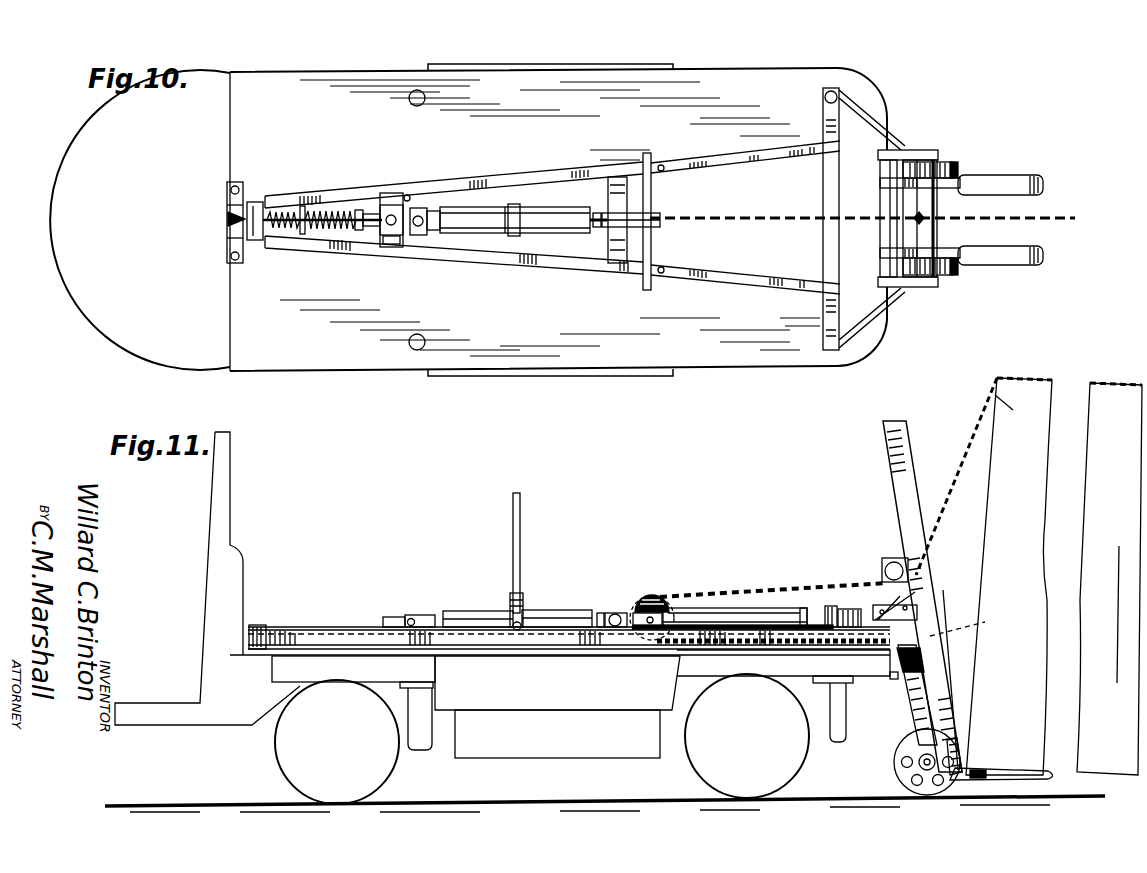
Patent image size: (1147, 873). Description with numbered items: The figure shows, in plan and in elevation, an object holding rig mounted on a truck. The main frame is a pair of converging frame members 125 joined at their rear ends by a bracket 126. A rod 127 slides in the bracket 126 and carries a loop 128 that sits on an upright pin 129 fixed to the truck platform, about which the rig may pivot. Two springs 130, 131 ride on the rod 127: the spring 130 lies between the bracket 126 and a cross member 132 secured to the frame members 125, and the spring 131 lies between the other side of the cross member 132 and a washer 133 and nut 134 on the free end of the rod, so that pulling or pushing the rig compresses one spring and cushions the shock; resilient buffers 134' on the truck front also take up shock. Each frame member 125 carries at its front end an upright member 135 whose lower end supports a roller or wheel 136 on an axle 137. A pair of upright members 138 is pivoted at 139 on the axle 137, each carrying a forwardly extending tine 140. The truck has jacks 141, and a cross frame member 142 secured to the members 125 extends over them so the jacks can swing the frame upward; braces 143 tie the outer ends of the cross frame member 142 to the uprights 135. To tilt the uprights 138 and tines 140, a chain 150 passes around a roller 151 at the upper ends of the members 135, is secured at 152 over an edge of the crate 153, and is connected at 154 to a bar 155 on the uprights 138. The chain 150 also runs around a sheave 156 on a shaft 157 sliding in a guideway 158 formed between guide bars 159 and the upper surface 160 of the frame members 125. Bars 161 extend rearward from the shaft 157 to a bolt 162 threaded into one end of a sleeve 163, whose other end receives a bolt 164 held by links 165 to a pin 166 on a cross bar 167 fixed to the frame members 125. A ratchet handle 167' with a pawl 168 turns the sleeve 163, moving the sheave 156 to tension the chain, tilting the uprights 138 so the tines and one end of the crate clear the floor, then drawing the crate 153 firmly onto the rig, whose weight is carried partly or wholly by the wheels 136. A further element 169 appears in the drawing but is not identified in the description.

In FIG. 10, the frame members 125 is at (492, 183).
In FIG. 11, the frame members 125 is at (308, 638).
In FIG. 10, the bracket 126 is at (258, 210).
In FIG. 11, the bracket 126 is at (257, 627).
In FIG. 10, the rod 127 is at (313, 230).
In FIG. 10, the loop 128 is at (244, 209).
In FIG. 10, the upright pin 129 is at (231, 220).
In FIG. 10, the spring 130 is at (288, 207).
In FIG. 10, the spring 131 is at (344, 207).
In FIG. 10, the cross member 132 is at (308, 208).
In FIG. 10, the washer 133 is at (361, 213).
In FIG. 10, the nut 134 is at (405, 200).
In FIG. 11, the resilient blocks or buffers 134' is at (882, 692).
In FIG. 10, the upright member 135 is at (923, 150).
In FIG. 11, the upright member 135 is at (912, 693).
In FIG. 10, the roller or wheel 136 is at (950, 272).
In FIG. 11, the roller or wheel 136 is at (960, 748).
In FIG. 10, the axle 137 is at (945, 280).
In FIG. 11, the axle 137 is at (935, 753).
In FIG. 10, the upright members 138 is at (941, 163).
In FIG. 11, the upright members 138 is at (904, 460).
In FIG. 10, the pivot 139 is at (943, 197).
In FIG. 10, the tine 140 is at (1022, 250).
In FIG. 11, the tine 140 is at (1031, 770).
In FIG. 10, the jacks 141 is at (839, 88).
In FIG. 10, the cross frame member 142 is at (839, 118).
In FIG. 11, the cross frame member 142 is at (832, 607).
In FIG. 10, the braces 143 is at (890, 138).
In FIG. 11, the braces 143 is at (895, 614).
In FIG. 10, the chain 150 is at (762, 215).
In FIG. 11, the chain 150 is at (787, 582).
In FIG. 11, the roller 151 is at (895, 557).
In FIG. 11, the chain securing point 152 is at (1128, 385).
In FIG. 11, the crate, bale or box 153 is at (1100, 380).
In FIG. 11, the chain connection 154 is at (985, 622).
In FIG. 11, the bar 155 is at (941, 623).
In FIG. 11, the sheave 156 is at (647, 603).
In FIG. 10, the pintle or shaft 157 is at (651, 247).
In FIG. 11, the pintle or shaft 157 is at (670, 610).
In FIG. 11, the guideway 158 is at (725, 618).
In FIG. 10, the guide bars 159 is at (778, 156).
In FIG. 11, the guide bars 159 is at (809, 607).
In FIG. 11, the upper surface 160 is at (748, 625).
In FIG. 10, the bars or links 161 is at (634, 215).
In FIG. 11, the bars or links 161 is at (625, 612).
In FIG. 10, the bolt 162 is at (601, 210).
In FIG. 11, the bolt 162 is at (602, 613).
In FIG. 10, the sleeve 163 is at (547, 212).
In FIG. 11, the sleeve 163 is at (555, 613).
In FIG. 10, the bolt 164 is at (437, 236).
In FIG. 11, the bolt 164 is at (443, 610).
In FIG. 10, the links or bars 165 is at (418, 215).
In FIG. 11, the links or bars 165 is at (411, 617).
In FIG. 10, the pin 166 is at (387, 226).
In FIG. 11, the pin 166 is at (398, 618).
In FIG. 10, the cross bar 167 is at (438, 162).
In FIG. 10, the ratchet handle 167' is at (533, 254).
In FIG. 11, the ratchet handle 167' is at (547, 553).
In FIG. 11, the pawl 168 is at (523, 598).
In FIG. 11, the pin 169 is at (514, 600).